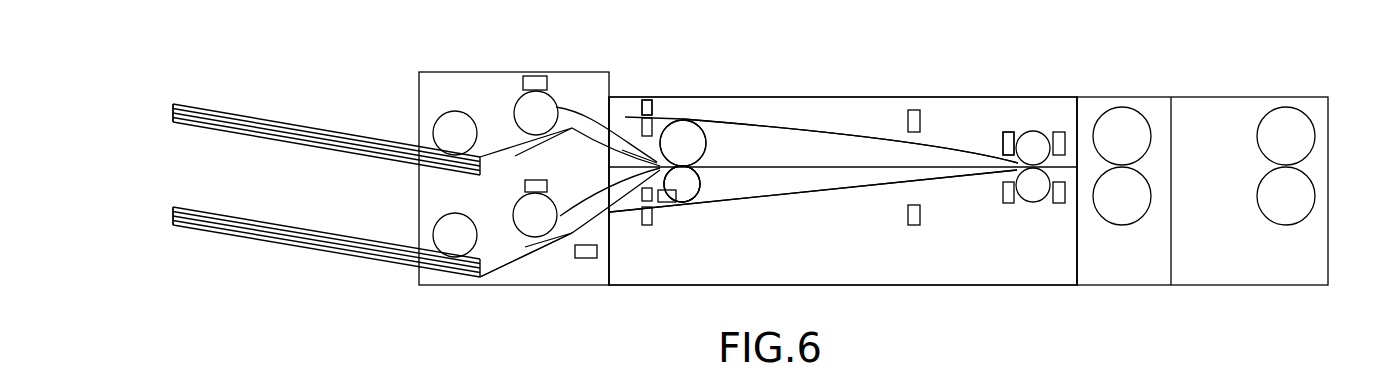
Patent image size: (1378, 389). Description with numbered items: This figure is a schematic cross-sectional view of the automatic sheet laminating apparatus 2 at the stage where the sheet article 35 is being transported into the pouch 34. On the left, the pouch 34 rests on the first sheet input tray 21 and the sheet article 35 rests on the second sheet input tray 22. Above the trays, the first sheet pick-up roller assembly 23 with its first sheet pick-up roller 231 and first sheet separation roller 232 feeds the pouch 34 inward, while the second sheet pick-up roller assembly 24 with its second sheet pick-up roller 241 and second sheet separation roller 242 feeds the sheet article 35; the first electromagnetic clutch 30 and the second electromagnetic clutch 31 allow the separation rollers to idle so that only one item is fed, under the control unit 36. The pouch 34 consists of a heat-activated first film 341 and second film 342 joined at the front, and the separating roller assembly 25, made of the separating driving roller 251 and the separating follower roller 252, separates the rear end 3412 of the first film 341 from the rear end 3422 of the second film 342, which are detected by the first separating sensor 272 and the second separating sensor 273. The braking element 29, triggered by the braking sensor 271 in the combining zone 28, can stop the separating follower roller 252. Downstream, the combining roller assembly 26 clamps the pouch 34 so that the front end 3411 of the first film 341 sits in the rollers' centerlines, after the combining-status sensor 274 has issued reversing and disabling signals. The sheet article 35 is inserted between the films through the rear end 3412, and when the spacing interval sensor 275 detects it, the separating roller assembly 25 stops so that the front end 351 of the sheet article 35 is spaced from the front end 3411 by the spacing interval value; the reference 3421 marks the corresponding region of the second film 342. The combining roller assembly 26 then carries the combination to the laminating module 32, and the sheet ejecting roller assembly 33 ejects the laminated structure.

The automatic sheet laminating apparatus 2 is at (1092, 33).
The first sheet input tray 21 is at (238, 128).
The second sheet input tray 22 is at (237, 233).
The first sheet pick-up roller assembly 23 is at (500, 139).
The second sheet pick-up roller assembly 24 is at (495, 253).
The separating roller assembly 25 is at (690, 143).
The combining roller assembly 26 is at (1037, 210).
The combining zone 28 is at (958, 220).
The braking element 29 is at (683, 193).
The first electromagnetic clutch 30 is at (537, 77).
The second electromagnetic clutch 31 is at (537, 182).
The laminating module 32 is at (1148, 88).
The sheet ejecting roller assembly 33 is at (1296, 130).
The pouch 34 is at (283, 125).
The sheet article 35 is at (283, 228).
The control unit 36 is at (588, 258).
The first sheet pick-up roller 231 is at (448, 128).
The first sheet separation roller 232 is at (547, 107).
The second sheet pick-up roller 241 is at (448, 228).
The second sheet separation roller 242 is at (527, 213).
The separating driving roller 251 is at (688, 125).
The separating follower roller 252 is at (705, 190).
The braking sensor 271 is at (912, 110).
The first separating sensor 272 is at (655, 98).
The second separating sensor 273 is at (665, 203).
The combining-status sensor 274 is at (1058, 132).
The spacing interval sensor 275 is at (1006, 132).
The first film 341 is at (794, 131).
The second film 342 is at (833, 188).
The front end of the sheet article 351 is at (905, 170).
The front end of the first film 3411 is at (1005, 152).
The rear end of the first film 3412 is at (648, 100).
The second web guide member 3421 is at (1004, 184).
The rear end of the second film 3422 is at (645, 225).